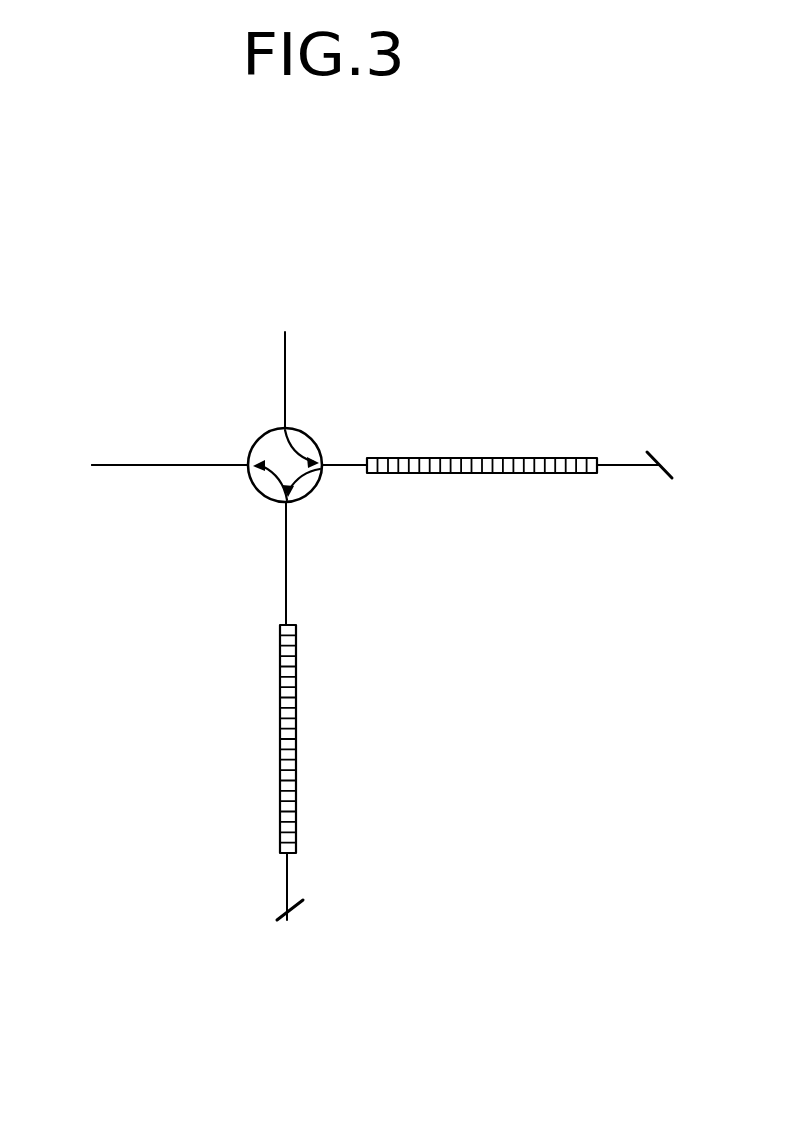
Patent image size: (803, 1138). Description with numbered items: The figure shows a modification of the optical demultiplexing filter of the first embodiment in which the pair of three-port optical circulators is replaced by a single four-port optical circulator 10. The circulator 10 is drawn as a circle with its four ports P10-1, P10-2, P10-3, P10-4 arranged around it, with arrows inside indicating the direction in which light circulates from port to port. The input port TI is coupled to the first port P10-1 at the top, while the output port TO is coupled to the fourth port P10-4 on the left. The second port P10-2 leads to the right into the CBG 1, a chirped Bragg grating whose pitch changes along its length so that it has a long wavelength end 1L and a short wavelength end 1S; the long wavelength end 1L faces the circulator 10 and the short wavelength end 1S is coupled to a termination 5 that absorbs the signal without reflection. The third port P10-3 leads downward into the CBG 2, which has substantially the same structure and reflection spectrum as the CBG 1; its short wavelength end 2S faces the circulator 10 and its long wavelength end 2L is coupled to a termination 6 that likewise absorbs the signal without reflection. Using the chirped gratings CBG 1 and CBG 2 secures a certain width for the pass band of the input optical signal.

The four-port optical circulator 10 is at (259, 441).
The input port TI is at (286, 347).
The output terminal TO is at (108, 468).
The first port of circulator P10-1 is at (285, 413).
The second port of circulator P10-2 is at (340, 462).
The third port of circulator P10-3 is at (290, 520).
The fourth port of circulator P10-4 is at (208, 468).
The CBG 1 is at (490, 458).
The long wavelength end 1L is at (370, 475).
The short wavelength end 1S is at (598, 474).
The termination 5 is at (657, 482).
The CBG 2 is at (297, 733).
The short wavelength end 2S is at (281, 626).
The long wavelength end 2L is at (284, 853).
The termination 6 is at (290, 910).